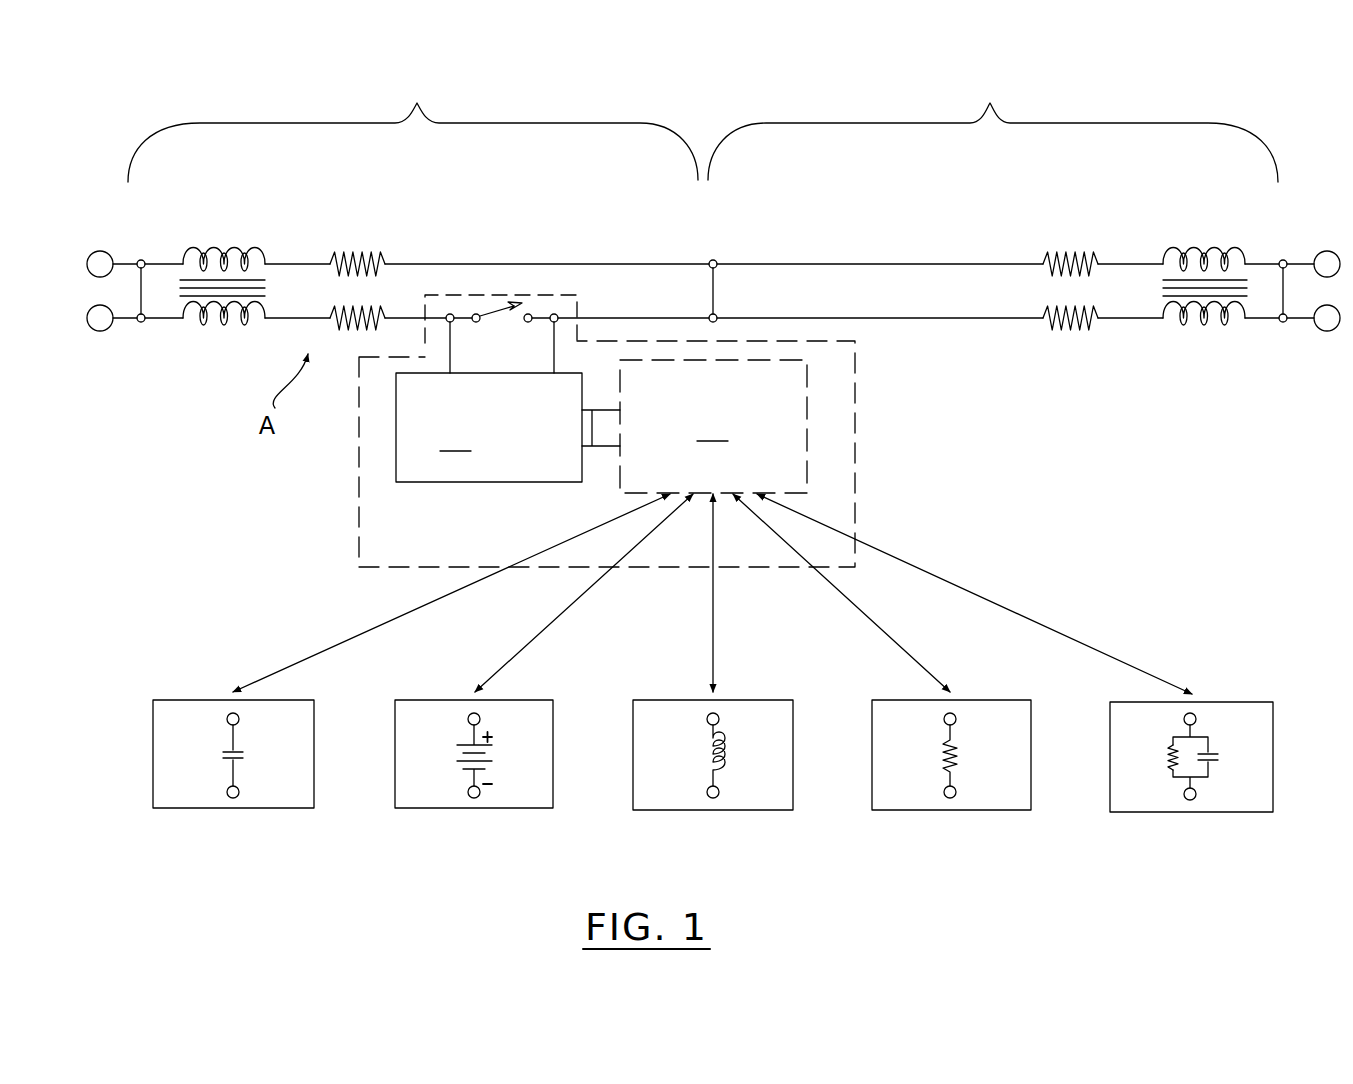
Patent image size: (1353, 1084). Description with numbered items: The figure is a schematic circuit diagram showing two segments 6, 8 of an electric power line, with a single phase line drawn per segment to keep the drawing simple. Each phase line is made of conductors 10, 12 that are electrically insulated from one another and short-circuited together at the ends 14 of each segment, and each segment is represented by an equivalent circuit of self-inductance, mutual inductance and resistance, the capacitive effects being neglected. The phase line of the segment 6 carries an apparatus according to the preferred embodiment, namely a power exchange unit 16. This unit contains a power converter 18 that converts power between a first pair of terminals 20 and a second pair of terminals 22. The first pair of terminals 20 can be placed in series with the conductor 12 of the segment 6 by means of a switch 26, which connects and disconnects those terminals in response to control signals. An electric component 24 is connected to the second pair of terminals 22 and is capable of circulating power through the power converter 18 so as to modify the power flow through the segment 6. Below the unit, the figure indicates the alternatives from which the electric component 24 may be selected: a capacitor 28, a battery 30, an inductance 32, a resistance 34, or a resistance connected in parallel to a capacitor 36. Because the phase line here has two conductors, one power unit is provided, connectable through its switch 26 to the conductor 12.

The segment 6 is at (413, 201).
The segment 8 is at (993, 199).
The conductor 10 is at (590, 262).
The conductor 12 is at (660, 316).
The ends 14 is at (139, 322).
The power exchange unit 16 is at (367, 522).
The power converter 18 is at (489, 427).
The first pair of terminals 20 is at (552, 358).
The second pair of terminals 22 is at (592, 448).
The electric component 24 is at (713, 426).
The switch 26 is at (487, 308).
The capacitor 28 is at (200, 798).
The battery 30 is at (432, 798).
The inductance 32 is at (682, 798).
The resistance 34 is at (908, 798).
The resistance connected in parallel to a capacitor 36 is at (1138, 798).